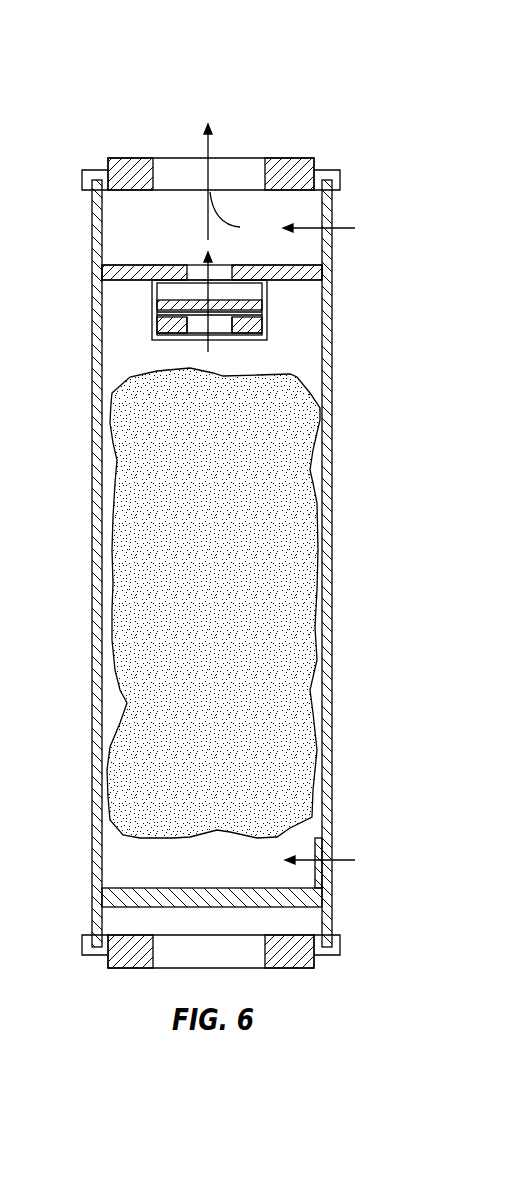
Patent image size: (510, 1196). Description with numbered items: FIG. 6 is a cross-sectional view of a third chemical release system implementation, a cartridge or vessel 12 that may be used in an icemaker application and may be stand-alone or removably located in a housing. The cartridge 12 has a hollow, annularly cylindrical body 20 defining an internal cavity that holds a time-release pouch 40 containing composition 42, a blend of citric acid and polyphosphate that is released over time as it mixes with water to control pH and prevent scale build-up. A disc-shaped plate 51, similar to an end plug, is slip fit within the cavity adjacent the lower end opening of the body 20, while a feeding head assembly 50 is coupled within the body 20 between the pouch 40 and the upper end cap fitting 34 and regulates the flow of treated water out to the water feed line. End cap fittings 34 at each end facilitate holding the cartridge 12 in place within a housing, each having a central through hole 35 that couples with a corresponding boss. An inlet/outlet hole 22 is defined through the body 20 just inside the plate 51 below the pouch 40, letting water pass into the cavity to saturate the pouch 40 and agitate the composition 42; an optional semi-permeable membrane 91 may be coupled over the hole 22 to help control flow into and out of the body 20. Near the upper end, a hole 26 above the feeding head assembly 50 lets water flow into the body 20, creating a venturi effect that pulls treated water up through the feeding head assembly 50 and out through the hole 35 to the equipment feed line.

The cartridge or vessel 12 is at (113, 98).
The body 20 is at (333, 372).
The inlet/outlet hole 22 is at (333, 850).
The hole 26 is at (333, 220).
The end cap fitting 34 is at (316, 160).
The central through hole 35 is at (254, 158).
The time-release pouch 40 is at (257, 603).
The composition 42 is at (293, 538).
The feeding head assembly 50 is at (135, 246).
The plate 51 is at (136, 892).
The semi-permeable membrane 91 is at (316, 846).